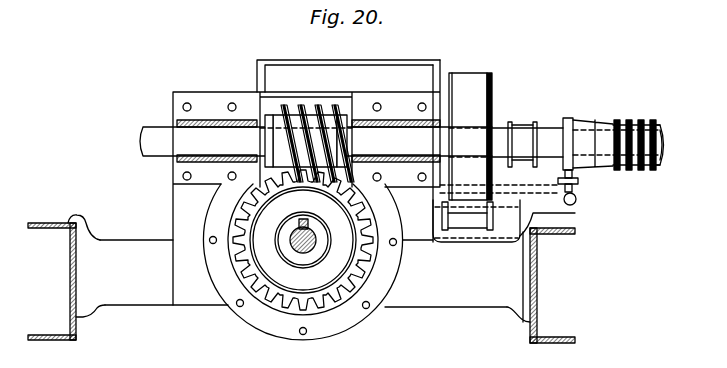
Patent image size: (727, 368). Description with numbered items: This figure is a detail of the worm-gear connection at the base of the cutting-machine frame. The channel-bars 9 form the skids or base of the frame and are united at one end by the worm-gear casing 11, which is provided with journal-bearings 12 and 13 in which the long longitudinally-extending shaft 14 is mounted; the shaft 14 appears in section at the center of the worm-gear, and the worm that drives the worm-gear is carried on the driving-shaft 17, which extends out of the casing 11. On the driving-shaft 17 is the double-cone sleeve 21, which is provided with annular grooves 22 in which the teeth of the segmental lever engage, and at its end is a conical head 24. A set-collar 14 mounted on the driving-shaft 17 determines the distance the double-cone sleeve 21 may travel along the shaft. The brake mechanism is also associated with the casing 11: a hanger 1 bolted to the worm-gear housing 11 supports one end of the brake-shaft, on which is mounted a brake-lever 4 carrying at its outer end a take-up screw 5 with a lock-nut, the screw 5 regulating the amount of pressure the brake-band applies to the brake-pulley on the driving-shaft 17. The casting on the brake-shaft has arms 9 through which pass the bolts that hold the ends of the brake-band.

The worm-gear casing 11 is at (343, 62).
The journal-bearing 12 is at (470, 73).
The journal-bearing 13 is at (493, 97).
The driving-shaft 17 is at (498, 125).
The longitudinally-extending shaft 14 is at (315, 242).
The conical head 24 is at (606, 121).
The annular grooves 22 is at (646, 124).
The double-cone sleeve 21 is at (655, 172).
The take-up screw 5 is at (562, 180).
The brake-lever 4 is at (580, 181).
The hanger 1 is at (517, 212).
The channel-bars 9 is at (497, 232).